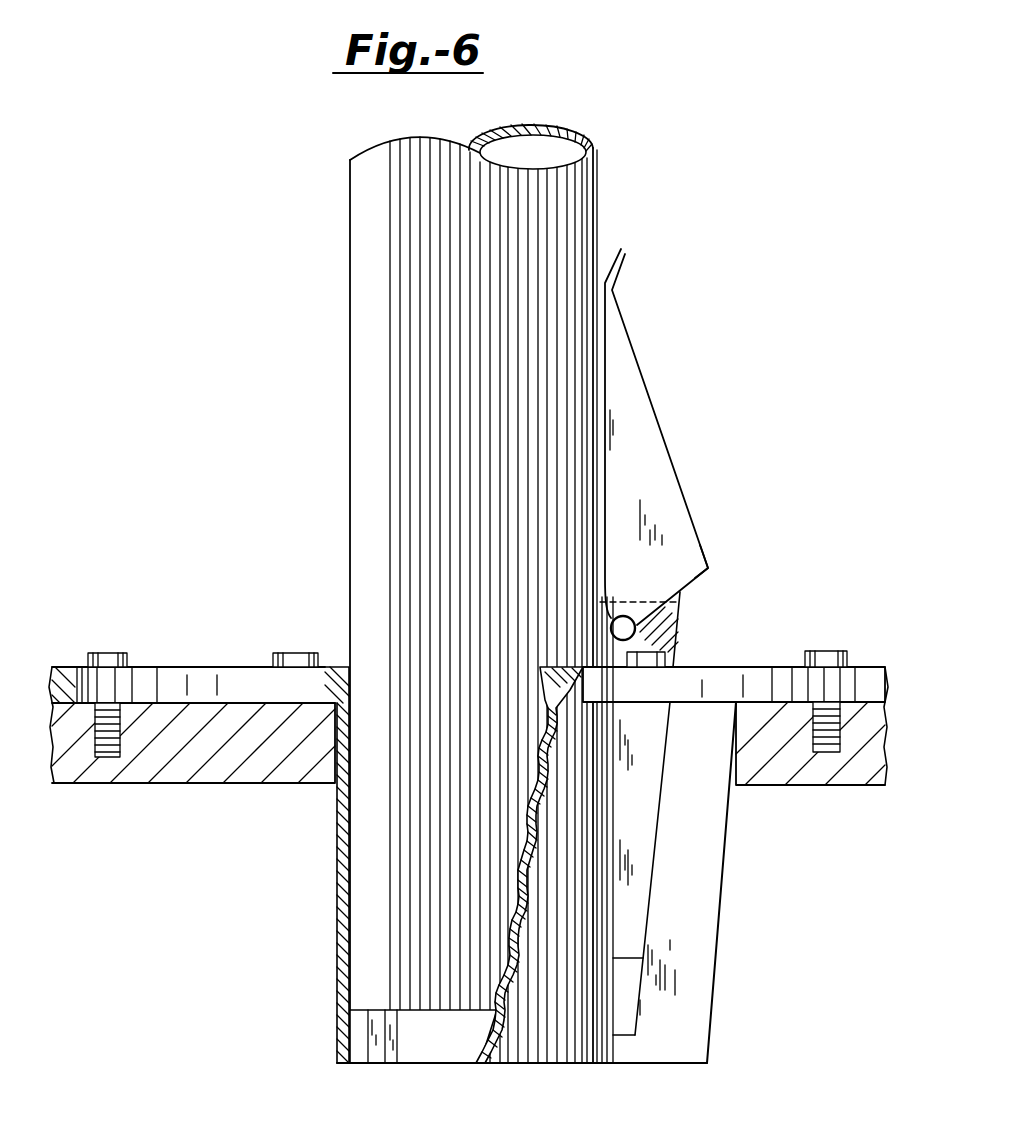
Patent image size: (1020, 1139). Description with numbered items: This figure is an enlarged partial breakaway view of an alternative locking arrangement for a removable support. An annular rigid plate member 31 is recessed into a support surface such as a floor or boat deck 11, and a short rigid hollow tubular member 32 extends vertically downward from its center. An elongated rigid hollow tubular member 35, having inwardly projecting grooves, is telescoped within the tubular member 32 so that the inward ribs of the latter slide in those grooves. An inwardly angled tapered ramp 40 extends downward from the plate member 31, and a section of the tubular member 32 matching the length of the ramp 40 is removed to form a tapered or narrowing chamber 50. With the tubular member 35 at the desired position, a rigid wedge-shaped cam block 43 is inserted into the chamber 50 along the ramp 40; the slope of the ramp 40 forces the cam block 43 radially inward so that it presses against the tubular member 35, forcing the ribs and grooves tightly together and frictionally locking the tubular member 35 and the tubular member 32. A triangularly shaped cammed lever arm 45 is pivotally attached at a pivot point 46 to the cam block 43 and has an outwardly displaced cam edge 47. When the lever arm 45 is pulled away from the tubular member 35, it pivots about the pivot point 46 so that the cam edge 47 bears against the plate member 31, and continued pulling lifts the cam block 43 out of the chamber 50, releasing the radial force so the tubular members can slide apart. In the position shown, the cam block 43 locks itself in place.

The floor or boat deck 11 is at (870, 667).
The plate member 31 is at (717, 667).
The tubular member 32 is at (336, 897).
The tubular member 35 is at (348, 502).
The tapered ramp 40 is at (724, 858).
The cam block 43 is at (640, 903).
The cammed lever arm 45 is at (642, 385).
The pivot point 46 is at (630, 618).
The cam edge 47 is at (708, 570).
The chamber 50 is at (626, 997).